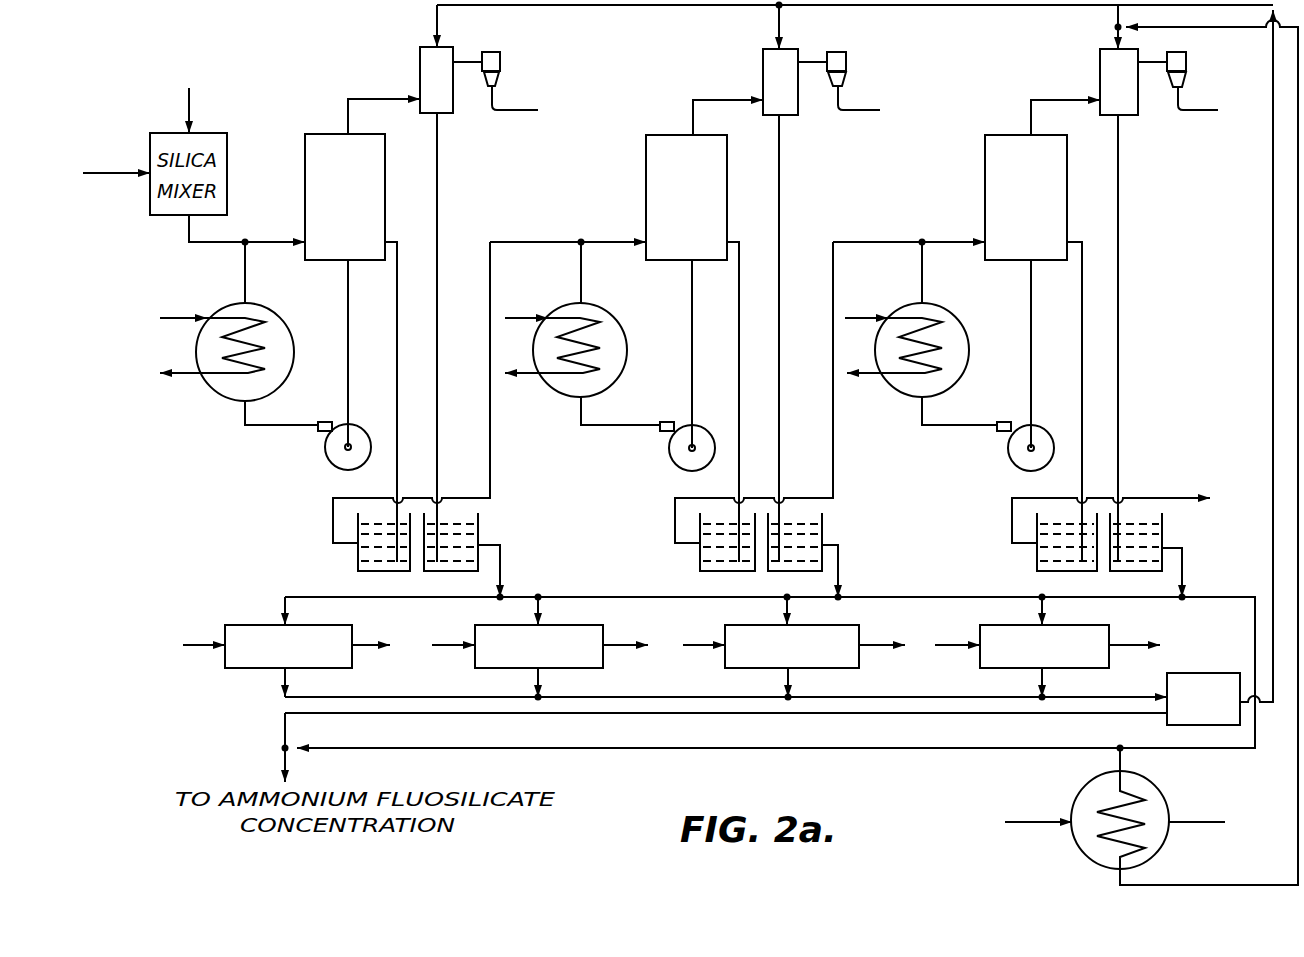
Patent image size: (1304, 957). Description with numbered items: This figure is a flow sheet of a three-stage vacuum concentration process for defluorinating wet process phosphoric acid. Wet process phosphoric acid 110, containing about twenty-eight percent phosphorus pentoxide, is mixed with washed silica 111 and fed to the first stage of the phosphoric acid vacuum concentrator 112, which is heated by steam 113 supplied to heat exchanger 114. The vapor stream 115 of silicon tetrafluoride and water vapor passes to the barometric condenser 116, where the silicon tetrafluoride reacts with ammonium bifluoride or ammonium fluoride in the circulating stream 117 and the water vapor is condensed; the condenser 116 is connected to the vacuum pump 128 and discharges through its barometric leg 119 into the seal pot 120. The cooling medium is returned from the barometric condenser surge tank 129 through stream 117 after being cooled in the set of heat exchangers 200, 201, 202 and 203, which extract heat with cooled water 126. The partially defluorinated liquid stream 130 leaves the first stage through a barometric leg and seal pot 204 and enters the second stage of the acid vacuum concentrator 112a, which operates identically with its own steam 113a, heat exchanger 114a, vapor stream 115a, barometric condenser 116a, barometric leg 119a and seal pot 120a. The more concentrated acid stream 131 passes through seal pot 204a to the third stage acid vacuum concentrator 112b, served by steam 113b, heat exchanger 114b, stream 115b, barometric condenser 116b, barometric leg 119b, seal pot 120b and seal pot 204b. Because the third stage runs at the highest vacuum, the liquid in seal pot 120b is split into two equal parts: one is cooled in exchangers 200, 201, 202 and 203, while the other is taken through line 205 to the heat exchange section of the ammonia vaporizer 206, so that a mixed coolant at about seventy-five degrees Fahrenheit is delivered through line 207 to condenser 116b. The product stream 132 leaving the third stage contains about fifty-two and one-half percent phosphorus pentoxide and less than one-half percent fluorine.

The wet process phosphoric acid 110 is at (139, 178).
The washed silica 111 is at (191, 108).
The first stage of the phosphoric acid vacuum concentrator 112 is at (303, 181).
The second stage of the acid vacuum concentrator 112a is at (643, 183).
The third stage acid vacuum concentrator 112b is at (982, 182).
The steam 113 is at (172, 316).
The steam 113a is at (537, 298).
The steam 113b is at (853, 313).
The heat exchanger 114 is at (228, 398).
The heat exchanger 114a is at (558, 395).
The heat exchanger 114b is at (903, 397).
The vapor stream 115 is at (371, 98).
The vapor stream 115a is at (710, 86).
The vapor stream 115b is at (1053, 88).
The barometric condenser 116 is at (441, 80).
The barometric condenser 116a is at (787, 107).
The barometric condenser 116b is at (1130, 105).
The circulating stream 117 is at (622, 5).
The barometric leg 119 is at (437, 155).
The barometric leg 119a is at (782, 195).
The barometric leg 119b is at (1120, 205).
The seal pot 120 is at (482, 531).
The seal pot 120a is at (822, 531).
The seal pot 120b is at (1160, 563).
The cooled water 126 is at (200, 647).
The vacuum pump 128 is at (500, 60).
The barometric condenser surge tank 129 is at (1197, 675).
The liquid stream 130 is at (397, 300).
The phosphoric acid stream 131 is at (738, 367).
The product stream 132 is at (1180, 505).
The heat exchanger 200 is at (340, 622).
The heat exchanger 201 is at (545, 622).
The heat exchanger 202 is at (856, 625).
The heat exchanger 203 is at (1105, 625).
The seal pot 204 is at (358, 561).
The seal pot 204a is at (700, 562).
The seal pot 204b is at (1037, 563).
The line 205 is at (1208, 752).
The ammonia vaporizer 206 is at (1070, 838).
The line 207 is at (1190, 882).